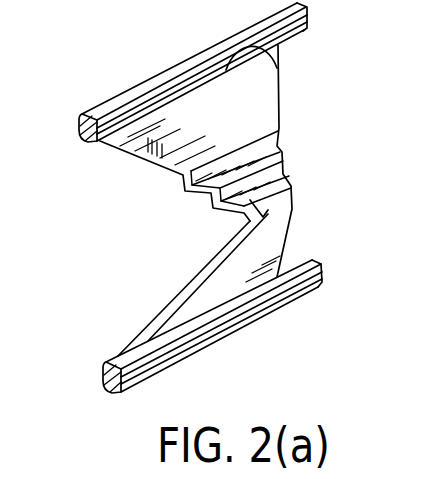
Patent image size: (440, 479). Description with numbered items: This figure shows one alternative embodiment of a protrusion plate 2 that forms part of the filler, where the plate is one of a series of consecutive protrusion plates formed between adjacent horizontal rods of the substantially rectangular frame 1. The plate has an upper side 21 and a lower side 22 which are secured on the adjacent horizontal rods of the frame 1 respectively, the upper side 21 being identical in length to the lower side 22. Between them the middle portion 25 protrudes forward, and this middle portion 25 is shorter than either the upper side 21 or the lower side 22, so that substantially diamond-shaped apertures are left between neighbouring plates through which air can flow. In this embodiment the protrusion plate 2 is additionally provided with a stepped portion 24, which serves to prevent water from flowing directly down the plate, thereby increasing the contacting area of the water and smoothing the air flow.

The frame 1 is at (136, 103).
The protrusion plate 2 is at (116, 160).
The upper side 21 is at (272, 50).
The lower side 22 is at (197, 320).
The stepped portion 24 is at (312, 166).
The middle portion 25 is at (263, 207).